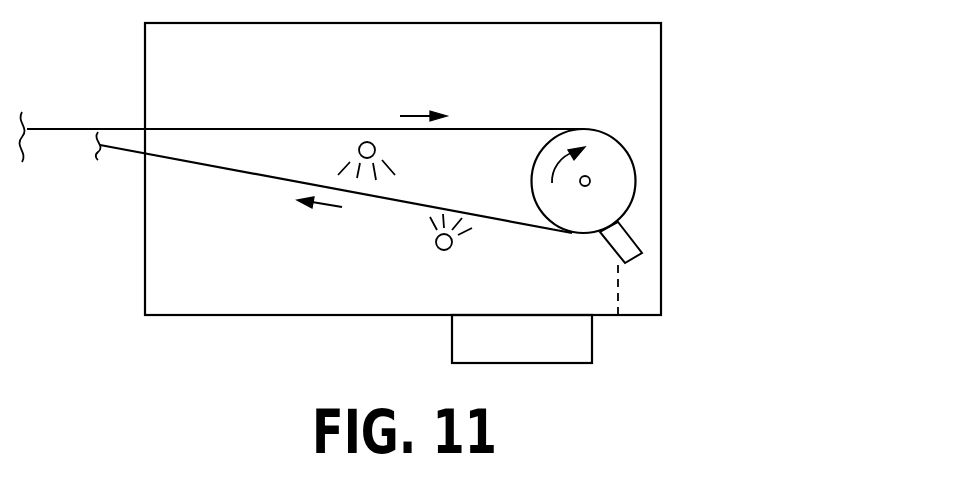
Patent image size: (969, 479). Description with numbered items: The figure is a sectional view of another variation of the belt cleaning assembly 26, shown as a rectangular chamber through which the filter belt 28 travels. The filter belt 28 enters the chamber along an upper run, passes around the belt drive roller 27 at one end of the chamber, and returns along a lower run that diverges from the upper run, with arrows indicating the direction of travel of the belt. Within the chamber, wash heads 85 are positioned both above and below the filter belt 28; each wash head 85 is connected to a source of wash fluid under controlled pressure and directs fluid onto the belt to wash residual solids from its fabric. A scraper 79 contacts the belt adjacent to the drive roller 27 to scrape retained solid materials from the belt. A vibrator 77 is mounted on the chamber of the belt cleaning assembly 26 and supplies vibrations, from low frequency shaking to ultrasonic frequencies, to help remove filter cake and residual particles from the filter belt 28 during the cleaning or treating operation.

The belt washing assembly 26 is at (662, 75).
The belt drive roller 27 is at (615, 165).
The filter belt 28 is at (72, 128).
The vibrator 77 is at (544, 351).
The scraper 79 is at (621, 227).
The wash heads 85 is at (375, 150).